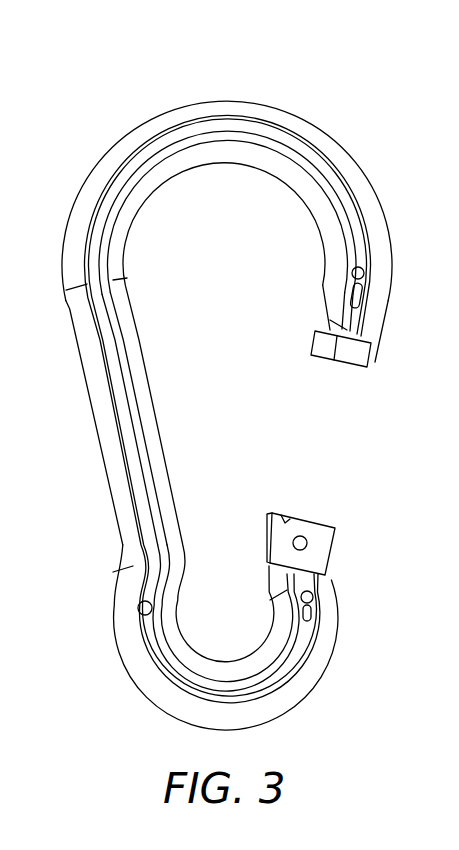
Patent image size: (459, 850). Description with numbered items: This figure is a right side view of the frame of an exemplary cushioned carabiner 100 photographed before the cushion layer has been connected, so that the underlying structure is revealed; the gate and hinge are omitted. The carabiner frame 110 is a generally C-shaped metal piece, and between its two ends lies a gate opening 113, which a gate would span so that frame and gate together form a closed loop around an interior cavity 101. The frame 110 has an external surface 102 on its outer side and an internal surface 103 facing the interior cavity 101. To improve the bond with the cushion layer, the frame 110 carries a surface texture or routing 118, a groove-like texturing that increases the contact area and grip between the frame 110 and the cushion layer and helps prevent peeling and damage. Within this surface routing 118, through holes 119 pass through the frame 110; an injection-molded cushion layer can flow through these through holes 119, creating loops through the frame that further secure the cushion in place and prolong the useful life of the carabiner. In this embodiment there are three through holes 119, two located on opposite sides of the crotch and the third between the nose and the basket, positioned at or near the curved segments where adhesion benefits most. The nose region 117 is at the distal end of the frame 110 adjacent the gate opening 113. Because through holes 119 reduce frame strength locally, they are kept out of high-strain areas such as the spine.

The cushioned carabiner 100 is at (348, 111).
The interior cavity 101 is at (205, 385).
The external surface 102 is at (228, 100).
The internal surface 103 is at (197, 658).
The carabiner frame 110 is at (123, 307).
The gate opening 113 is at (305, 442).
The nose end cap 117 is at (358, 333).
The surface texturing 118 is at (117, 183).
The through holes 119 is at (365, 274).